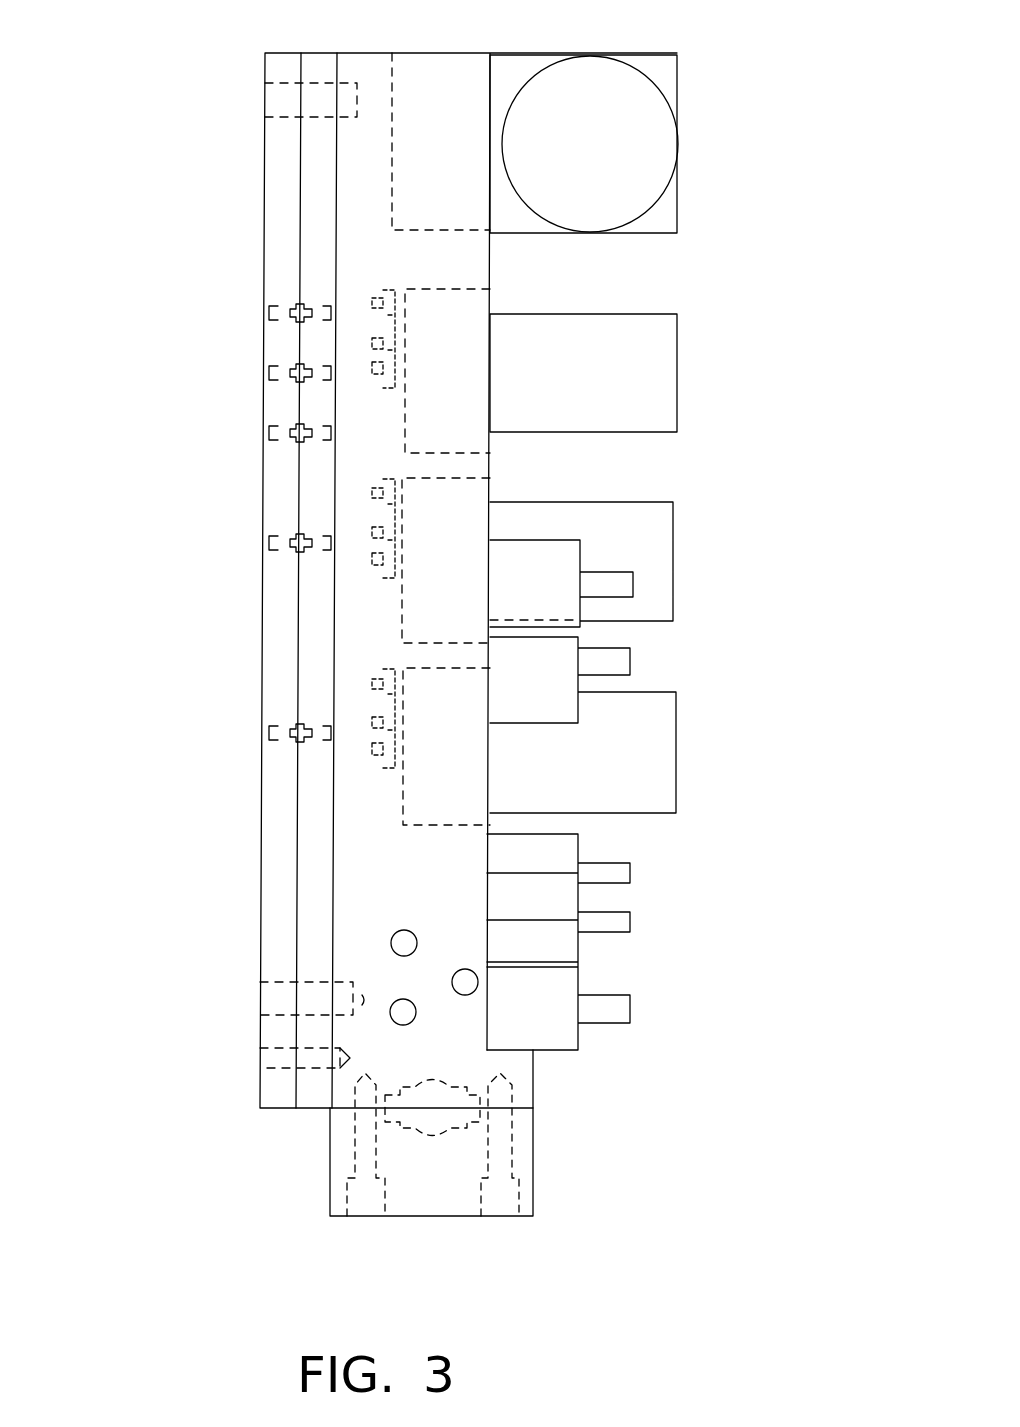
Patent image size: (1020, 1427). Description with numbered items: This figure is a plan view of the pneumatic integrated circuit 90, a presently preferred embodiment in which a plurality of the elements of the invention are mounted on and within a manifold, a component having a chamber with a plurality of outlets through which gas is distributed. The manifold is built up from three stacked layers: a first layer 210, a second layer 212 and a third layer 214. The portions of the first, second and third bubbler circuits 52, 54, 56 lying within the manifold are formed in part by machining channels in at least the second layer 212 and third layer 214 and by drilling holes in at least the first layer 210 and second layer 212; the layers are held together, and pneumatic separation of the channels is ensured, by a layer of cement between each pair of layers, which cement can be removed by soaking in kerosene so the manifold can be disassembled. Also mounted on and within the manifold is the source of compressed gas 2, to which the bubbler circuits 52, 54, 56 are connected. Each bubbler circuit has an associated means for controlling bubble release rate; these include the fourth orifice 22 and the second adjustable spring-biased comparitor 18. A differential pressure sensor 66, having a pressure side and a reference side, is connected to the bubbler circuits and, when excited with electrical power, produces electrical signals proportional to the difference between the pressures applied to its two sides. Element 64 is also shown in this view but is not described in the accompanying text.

The pneumatic integrated circuit 90 is at (200, 199).
The first layer 210 is at (292, 52).
The second layer 212 is at (322, 52).
The third layer 214 is at (420, 52).
The source of compressed gas 2 is at (683, 160).
The second adjustable spring-biased comparitor 18 is at (685, 363).
The fourth orifice 22 is at (288, 302).
The first bubbler circuit 52 is at (395, 917).
The second bubbler circuit 54 is at (447, 981).
The third bubbler circuit 56 is at (393, 1028).
The connector block 64 is at (635, 888).
The differential pressure sensor 66 is at (427, 1158).